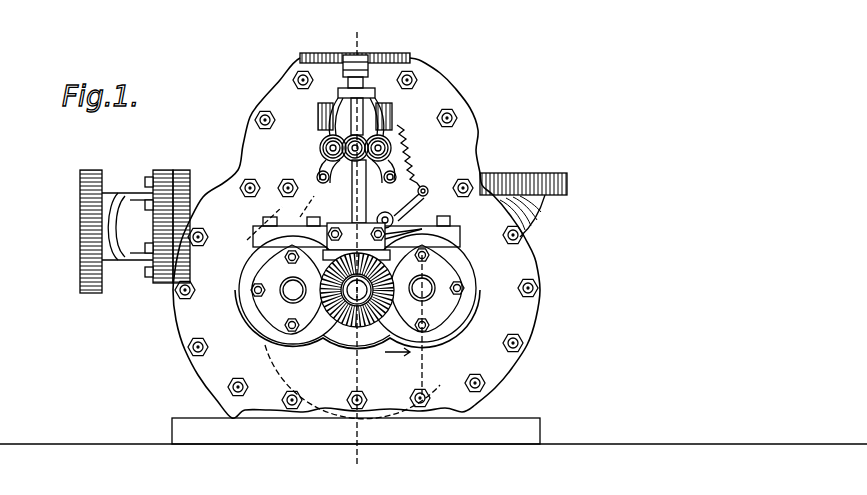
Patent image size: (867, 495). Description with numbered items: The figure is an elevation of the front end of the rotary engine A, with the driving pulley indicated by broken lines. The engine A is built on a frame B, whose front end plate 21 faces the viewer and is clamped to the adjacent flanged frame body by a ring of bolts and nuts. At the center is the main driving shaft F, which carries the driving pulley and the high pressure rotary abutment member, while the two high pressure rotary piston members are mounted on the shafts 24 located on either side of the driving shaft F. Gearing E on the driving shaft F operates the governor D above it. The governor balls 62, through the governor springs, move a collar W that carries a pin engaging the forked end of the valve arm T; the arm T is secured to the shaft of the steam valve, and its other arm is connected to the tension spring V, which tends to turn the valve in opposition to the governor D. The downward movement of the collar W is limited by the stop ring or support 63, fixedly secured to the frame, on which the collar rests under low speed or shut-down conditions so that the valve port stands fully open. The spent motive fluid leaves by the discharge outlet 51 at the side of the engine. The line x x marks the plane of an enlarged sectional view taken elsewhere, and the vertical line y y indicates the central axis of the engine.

The front end plate 21 is at (280, 93).
The shafts 24 is at (262, 322).
The discharge outlet 51 is at (80, 236).
The governor balls 62 is at (318, 148).
The stop ring or support 63 is at (300, 242).
The rotary engine A is at (244, 125).
The frame B is at (442, 78).
The governor D is at (402, 144).
The gearing E is at (395, 300).
The driving shaft F is at (362, 298).
The valve arm T is at (432, 208).
The tension spring V is at (412, 152).
The collar W is at (300, 230).
The section line x- x is at (343, 307).
The axis y- y is at (353, 255).